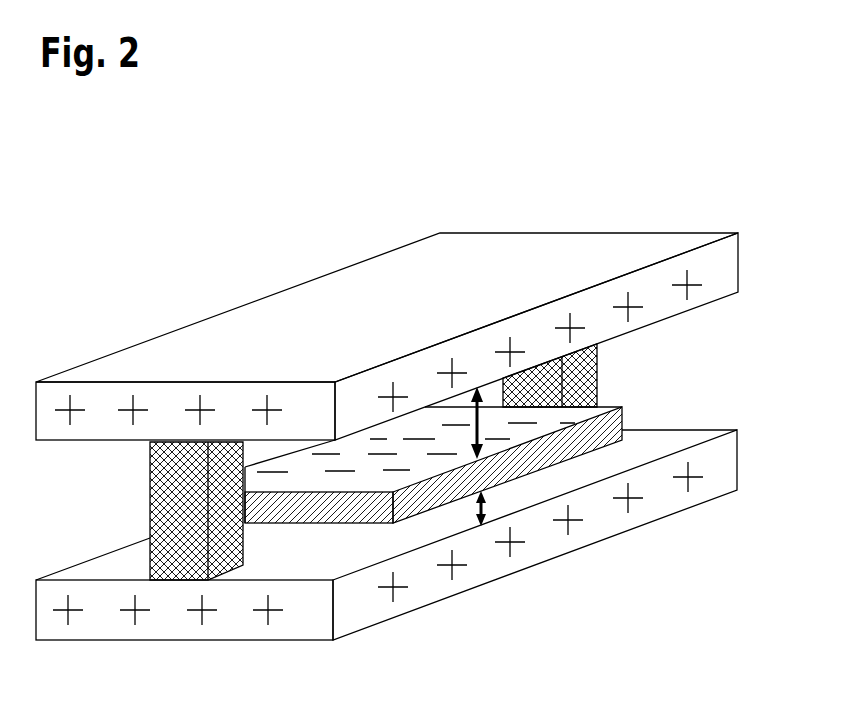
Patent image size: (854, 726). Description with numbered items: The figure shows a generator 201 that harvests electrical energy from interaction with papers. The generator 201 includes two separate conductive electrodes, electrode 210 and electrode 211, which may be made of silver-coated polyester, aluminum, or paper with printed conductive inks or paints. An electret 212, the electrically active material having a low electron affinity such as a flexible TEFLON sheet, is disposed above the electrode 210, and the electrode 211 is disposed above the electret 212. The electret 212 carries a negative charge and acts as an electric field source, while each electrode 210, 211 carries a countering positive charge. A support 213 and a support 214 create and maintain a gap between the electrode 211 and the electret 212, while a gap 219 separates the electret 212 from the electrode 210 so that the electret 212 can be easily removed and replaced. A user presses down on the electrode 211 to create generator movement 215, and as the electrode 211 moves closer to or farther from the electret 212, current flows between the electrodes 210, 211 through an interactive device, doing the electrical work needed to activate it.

The generator 201 is at (746, 73).
The electrode 210 is at (183, 608).
The electrode 211 is at (182, 406).
The electret 212 is at (293, 520).
The support 213 is at (194, 510).
The support 214 is at (546, 401).
The generator movement 215 is at (392, 433).
The gap 219 is at (567, 507).